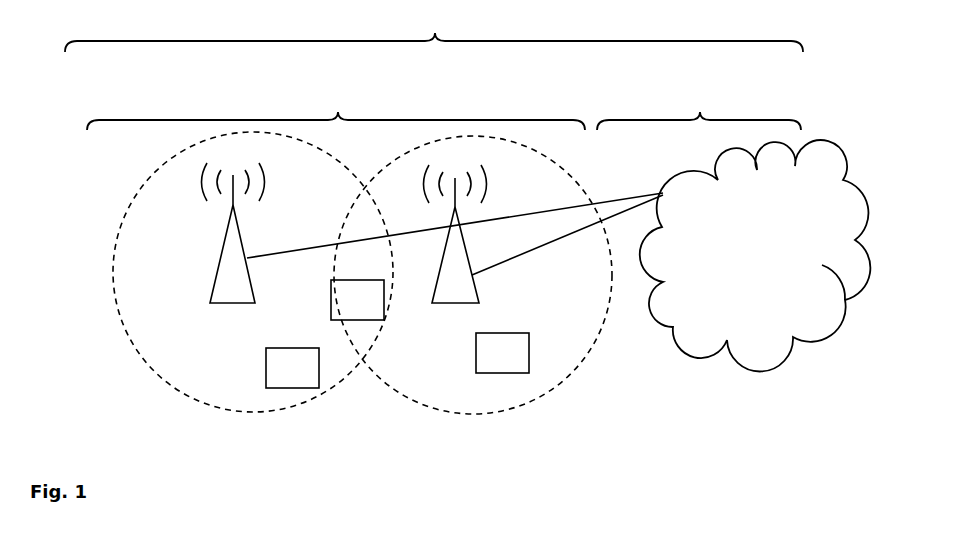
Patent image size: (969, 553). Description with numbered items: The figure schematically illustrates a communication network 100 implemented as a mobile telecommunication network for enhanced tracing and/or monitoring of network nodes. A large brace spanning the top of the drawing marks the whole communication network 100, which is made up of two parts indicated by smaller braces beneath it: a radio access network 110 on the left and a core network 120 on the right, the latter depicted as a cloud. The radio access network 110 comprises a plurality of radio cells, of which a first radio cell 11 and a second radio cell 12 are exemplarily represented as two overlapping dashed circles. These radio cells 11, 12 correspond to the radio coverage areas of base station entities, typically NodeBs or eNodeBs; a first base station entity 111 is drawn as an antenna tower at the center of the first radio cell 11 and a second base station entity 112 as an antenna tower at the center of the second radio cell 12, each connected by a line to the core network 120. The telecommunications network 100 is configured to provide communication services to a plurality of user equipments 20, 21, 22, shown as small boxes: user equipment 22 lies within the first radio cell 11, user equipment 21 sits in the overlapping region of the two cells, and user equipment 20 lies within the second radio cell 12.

The communication network 100 is at (434, 28).
The radio access network 110 is at (336, 108).
The core network 120 is at (733, 229).
The first radio cell 11 is at (157, 374).
The second radio cell 12 is at (398, 392).
The first base station entity 111 is at (233, 233).
The second base station entity 112 is at (455, 234).
The user equipment 20 is at (502, 353).
The user equipment 21 is at (357, 300).
The user equipment 22 is at (292, 368).